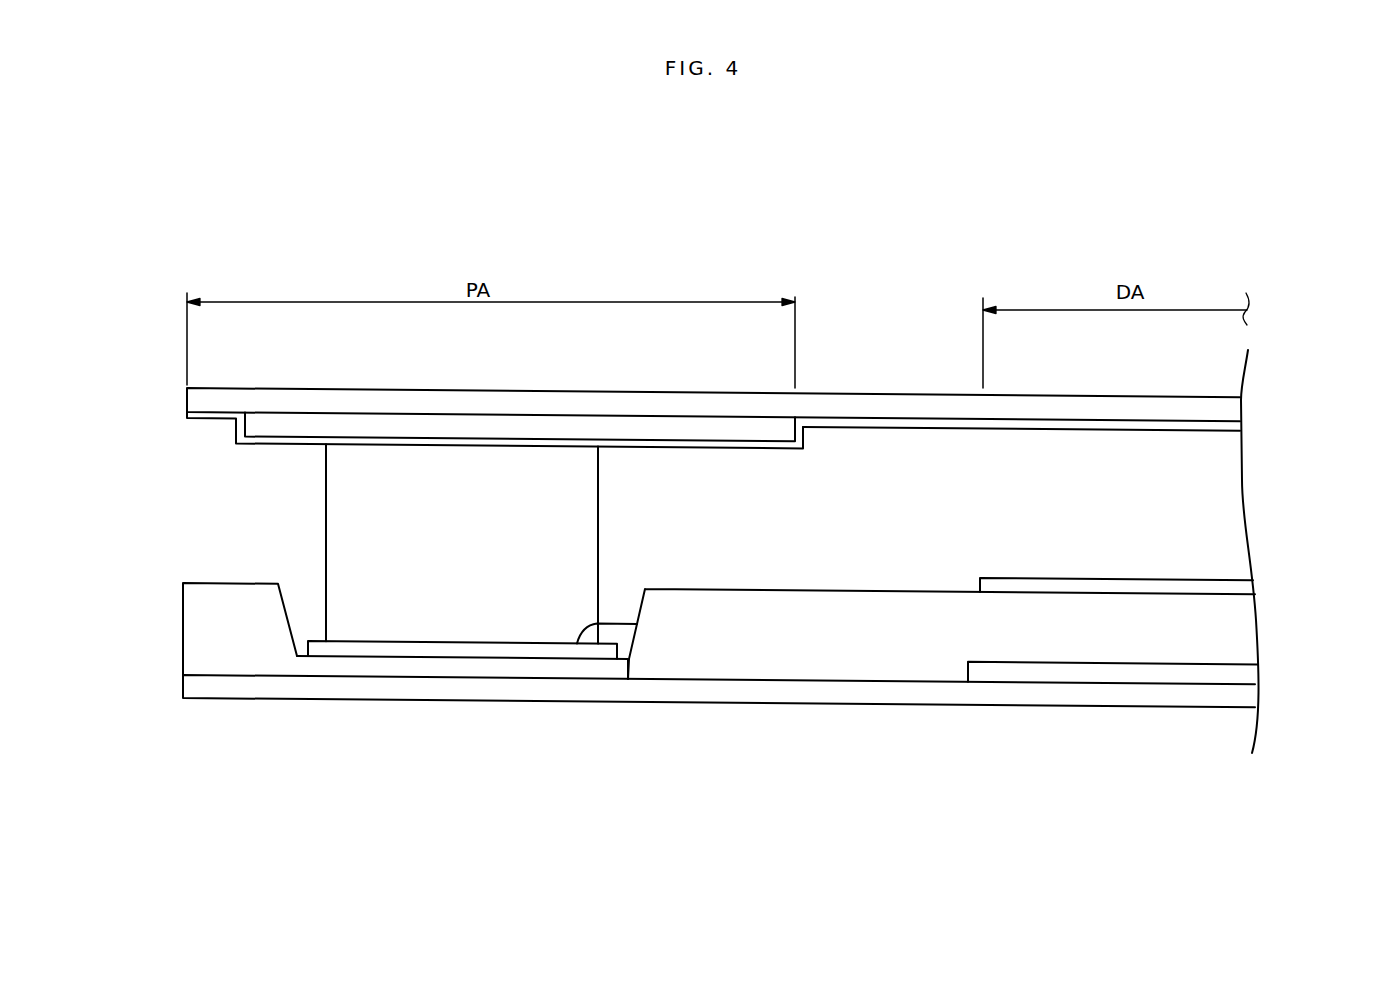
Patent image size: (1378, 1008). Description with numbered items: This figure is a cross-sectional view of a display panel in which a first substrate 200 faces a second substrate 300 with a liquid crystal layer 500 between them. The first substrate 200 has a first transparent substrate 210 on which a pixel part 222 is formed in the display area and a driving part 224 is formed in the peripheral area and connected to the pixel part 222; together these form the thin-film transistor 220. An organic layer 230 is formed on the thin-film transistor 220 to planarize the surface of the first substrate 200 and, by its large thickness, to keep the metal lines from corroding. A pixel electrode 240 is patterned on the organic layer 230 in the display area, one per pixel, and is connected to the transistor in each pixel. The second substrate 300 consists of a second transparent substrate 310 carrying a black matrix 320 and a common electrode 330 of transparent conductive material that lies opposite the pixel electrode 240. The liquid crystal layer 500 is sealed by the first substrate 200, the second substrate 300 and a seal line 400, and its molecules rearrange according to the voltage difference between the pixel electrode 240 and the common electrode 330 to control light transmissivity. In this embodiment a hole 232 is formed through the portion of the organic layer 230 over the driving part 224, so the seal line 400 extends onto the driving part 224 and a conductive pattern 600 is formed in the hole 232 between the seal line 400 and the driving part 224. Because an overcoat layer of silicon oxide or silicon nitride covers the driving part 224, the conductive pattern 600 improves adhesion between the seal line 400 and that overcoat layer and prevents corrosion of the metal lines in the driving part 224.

The first substrate 200 is at (178, 583).
The first transparent substrate 210 is at (1197, 695).
The thin-film transistor 220 is at (1020, 795).
The pixel part 222 is at (1003, 673).
The driving part 224 is at (608, 668).
The organic layer 230 is at (1233, 628).
The hole 232 is at (577, 640).
The pixel electrode 240 is at (1102, 584).
The second substrate 300 is at (177, 388).
The second transparent substrate 310 is at (897, 412).
The black matrix 320 is at (477, 427).
The common electrode 330 is at (1096, 428).
The seal line 400 is at (333, 510).
The liquid crystal layer 500 is at (1230, 499).
The conductive pattern 600 is at (433, 650).